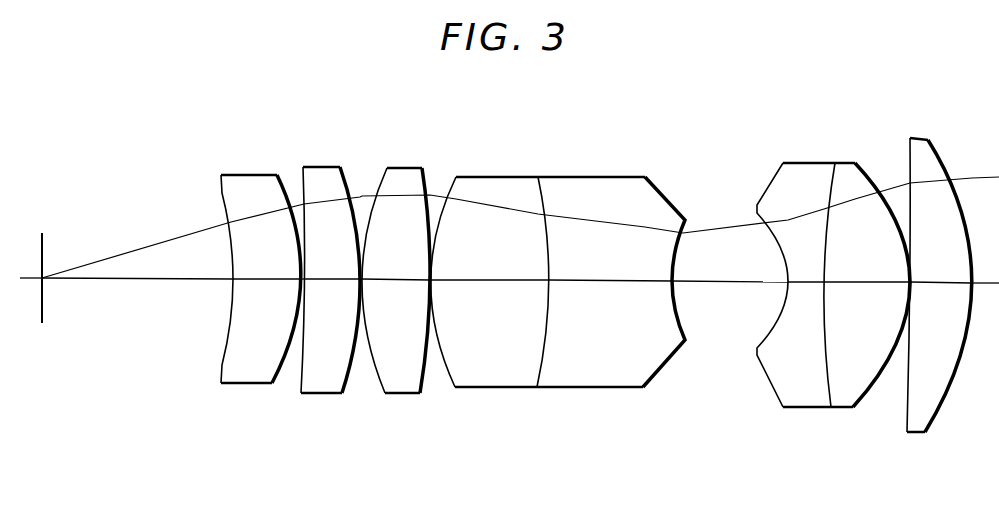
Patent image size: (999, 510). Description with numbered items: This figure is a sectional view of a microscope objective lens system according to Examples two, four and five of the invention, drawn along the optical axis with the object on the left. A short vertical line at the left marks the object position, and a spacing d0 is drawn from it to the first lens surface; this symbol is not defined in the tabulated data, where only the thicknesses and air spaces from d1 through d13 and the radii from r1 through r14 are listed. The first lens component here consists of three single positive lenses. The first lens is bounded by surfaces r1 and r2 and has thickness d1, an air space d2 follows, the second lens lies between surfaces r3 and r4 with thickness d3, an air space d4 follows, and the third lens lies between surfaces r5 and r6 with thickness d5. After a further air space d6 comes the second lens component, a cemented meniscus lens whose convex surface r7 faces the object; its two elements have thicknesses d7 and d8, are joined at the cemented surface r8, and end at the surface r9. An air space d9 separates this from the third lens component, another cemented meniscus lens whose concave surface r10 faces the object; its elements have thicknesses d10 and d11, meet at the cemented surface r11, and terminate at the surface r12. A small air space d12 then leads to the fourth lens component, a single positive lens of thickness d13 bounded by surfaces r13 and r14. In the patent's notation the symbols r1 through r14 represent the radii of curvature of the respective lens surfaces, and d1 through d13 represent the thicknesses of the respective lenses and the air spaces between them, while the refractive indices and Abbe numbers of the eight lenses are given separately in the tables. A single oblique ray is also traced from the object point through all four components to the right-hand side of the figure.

The object distance to first lens surface d0 is at (183, 279).
The thickness of first lens d1 is at (256, 279).
The air space between first and second lenses d2 is at (304, 279).
The thickness of second lens d3 is at (333, 282).
The air space between second and third lenses d4 is at (362, 279).
The thickness of third lens d5 is at (395, 283).
The air space between third lens and second lens component d6 is at (432, 280).
The thickness of fourth lens element d7 is at (494, 280).
The thickness of fifth lens element d8 is at (582, 281).
The air space between second and third lens components d9 is at (720, 282).
The thickness of sixth lens element d10 is at (806, 282).
The thickness of seventh lens element d11 is at (843, 282).
The air space between third and fourth lens components d12 is at (910, 281).
The thickness of eighth lens d13 is at (935, 282).
The radius of curvature of first lens surface r1 is at (222, 348).
The radius of curvature of second lens surface r2 is at (282, 373).
The radius of curvature of third lens surface r3 is at (298, 380).
The radius of curvature of fourth lens surface r4 is at (345, 382).
The radius of curvature of fifth lens surface r5 is at (377, 380).
The radius of curvature of sixth lens surface r6 is at (427, 380).
The radius of curvature of seventh lens surface r7 is at (454, 384).
The radius of curvature of eighth lens surface r8 is at (540, 370).
The radius of curvature of ninth lens surface r9 is at (688, 330).
The radius of curvature of tenth lens surface r10 is at (760, 338).
The radius of curvature of eleventh lens surface r11 is at (828, 393).
The radius of curvature of twelfth lens surface r12 is at (875, 389).
The radius of curvature of thirteenth lens surface r13 is at (908, 410).
The radius of curvature of fourteenth lens surface r14 is at (948, 393).